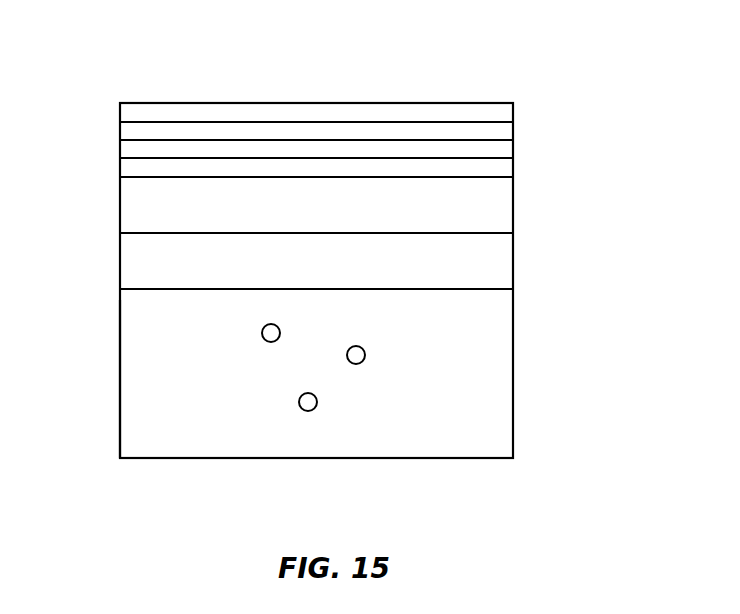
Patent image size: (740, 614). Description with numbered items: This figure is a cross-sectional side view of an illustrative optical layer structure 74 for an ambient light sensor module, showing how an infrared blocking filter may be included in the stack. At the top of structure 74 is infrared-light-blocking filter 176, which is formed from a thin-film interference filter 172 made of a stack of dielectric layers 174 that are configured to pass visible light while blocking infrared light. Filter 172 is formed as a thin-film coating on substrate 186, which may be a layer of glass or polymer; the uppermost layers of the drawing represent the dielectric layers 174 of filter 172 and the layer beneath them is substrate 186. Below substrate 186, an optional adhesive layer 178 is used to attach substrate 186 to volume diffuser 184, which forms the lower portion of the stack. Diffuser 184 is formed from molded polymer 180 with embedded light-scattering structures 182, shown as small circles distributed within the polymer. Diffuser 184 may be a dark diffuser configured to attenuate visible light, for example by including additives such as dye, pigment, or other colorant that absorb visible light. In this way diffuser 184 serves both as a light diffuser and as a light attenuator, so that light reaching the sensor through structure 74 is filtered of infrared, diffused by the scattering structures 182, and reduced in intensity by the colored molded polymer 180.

The structure 74 is at (520, 55).
The filter 172 is at (105, 103).
The dielectric layers 174 is at (505, 113).
The infrared-light-blocking filter 176 is at (596, 103).
The adhesive layer 178 is at (503, 263).
The molded polymer 180 is at (503, 385).
The light-scattering structures 182 is at (355, 364).
The volume diffuser 184 is at (105, 304).
The substrate 186 is at (130, 208).